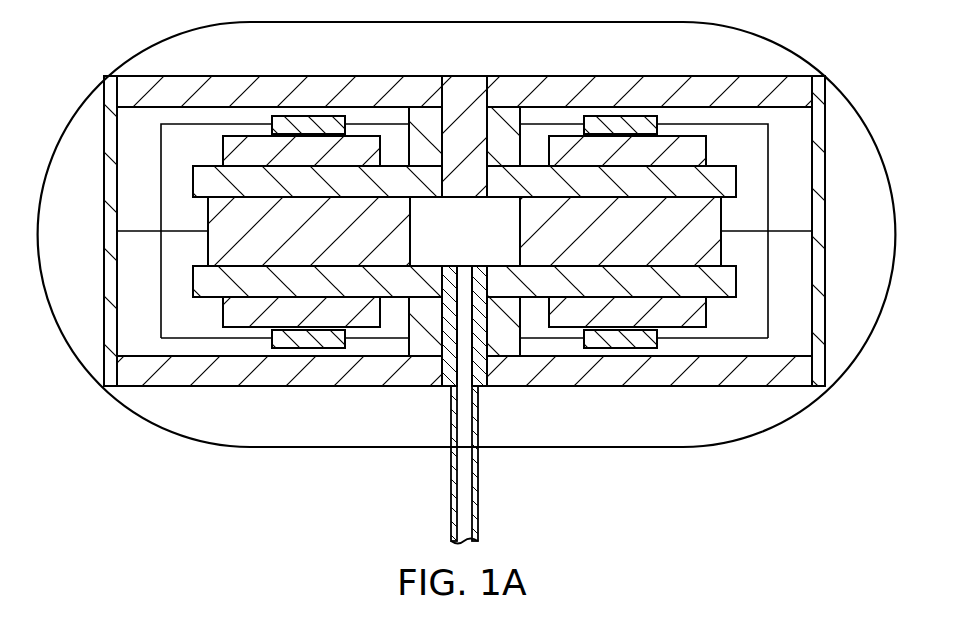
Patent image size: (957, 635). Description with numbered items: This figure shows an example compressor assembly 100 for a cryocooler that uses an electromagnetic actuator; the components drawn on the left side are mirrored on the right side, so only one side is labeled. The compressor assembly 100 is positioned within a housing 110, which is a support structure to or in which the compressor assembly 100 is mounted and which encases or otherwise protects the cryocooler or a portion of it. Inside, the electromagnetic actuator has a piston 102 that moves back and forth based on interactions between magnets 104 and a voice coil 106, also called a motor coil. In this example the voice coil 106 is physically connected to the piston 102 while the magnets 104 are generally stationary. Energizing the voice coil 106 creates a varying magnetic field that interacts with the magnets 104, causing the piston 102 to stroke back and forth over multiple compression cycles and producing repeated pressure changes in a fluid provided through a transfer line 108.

The compressor assembly 100 is at (640, 498).
The piston 102 is at (330, 243).
The magnets 104 is at (355, 145).
The voice coil 106 is at (306, 348).
The transfer line 108 is at (450, 491).
The housing 110 is at (241, 388).